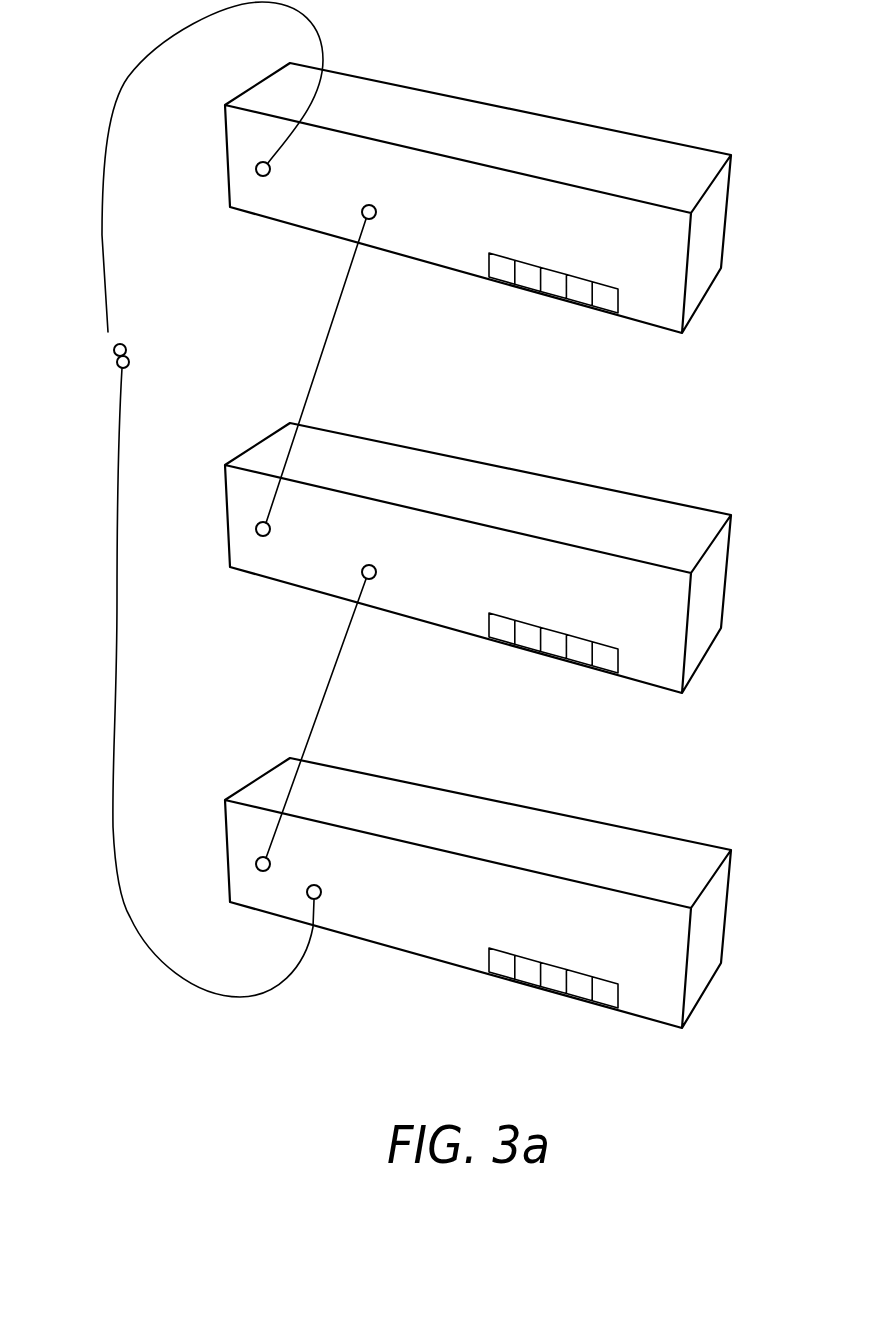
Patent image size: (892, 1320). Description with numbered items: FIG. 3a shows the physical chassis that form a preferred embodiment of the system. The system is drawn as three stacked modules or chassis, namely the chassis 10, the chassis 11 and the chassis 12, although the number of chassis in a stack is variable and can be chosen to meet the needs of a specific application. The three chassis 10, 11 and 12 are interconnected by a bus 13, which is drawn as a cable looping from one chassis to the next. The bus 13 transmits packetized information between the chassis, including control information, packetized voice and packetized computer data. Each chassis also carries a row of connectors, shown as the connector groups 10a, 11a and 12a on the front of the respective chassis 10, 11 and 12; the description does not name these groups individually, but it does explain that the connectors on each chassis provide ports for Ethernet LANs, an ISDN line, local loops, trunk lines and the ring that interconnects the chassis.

The chassis 10 is at (713, 208).
The connector of first device unit 10a is at (562, 302).
The chassis 11 is at (713, 568).
The connector of second device unit 11a is at (562, 662).
The chassis 12 is at (713, 912).
The connector of third device unit 12a is at (588, 1007).
The bus 13 is at (117, 468).